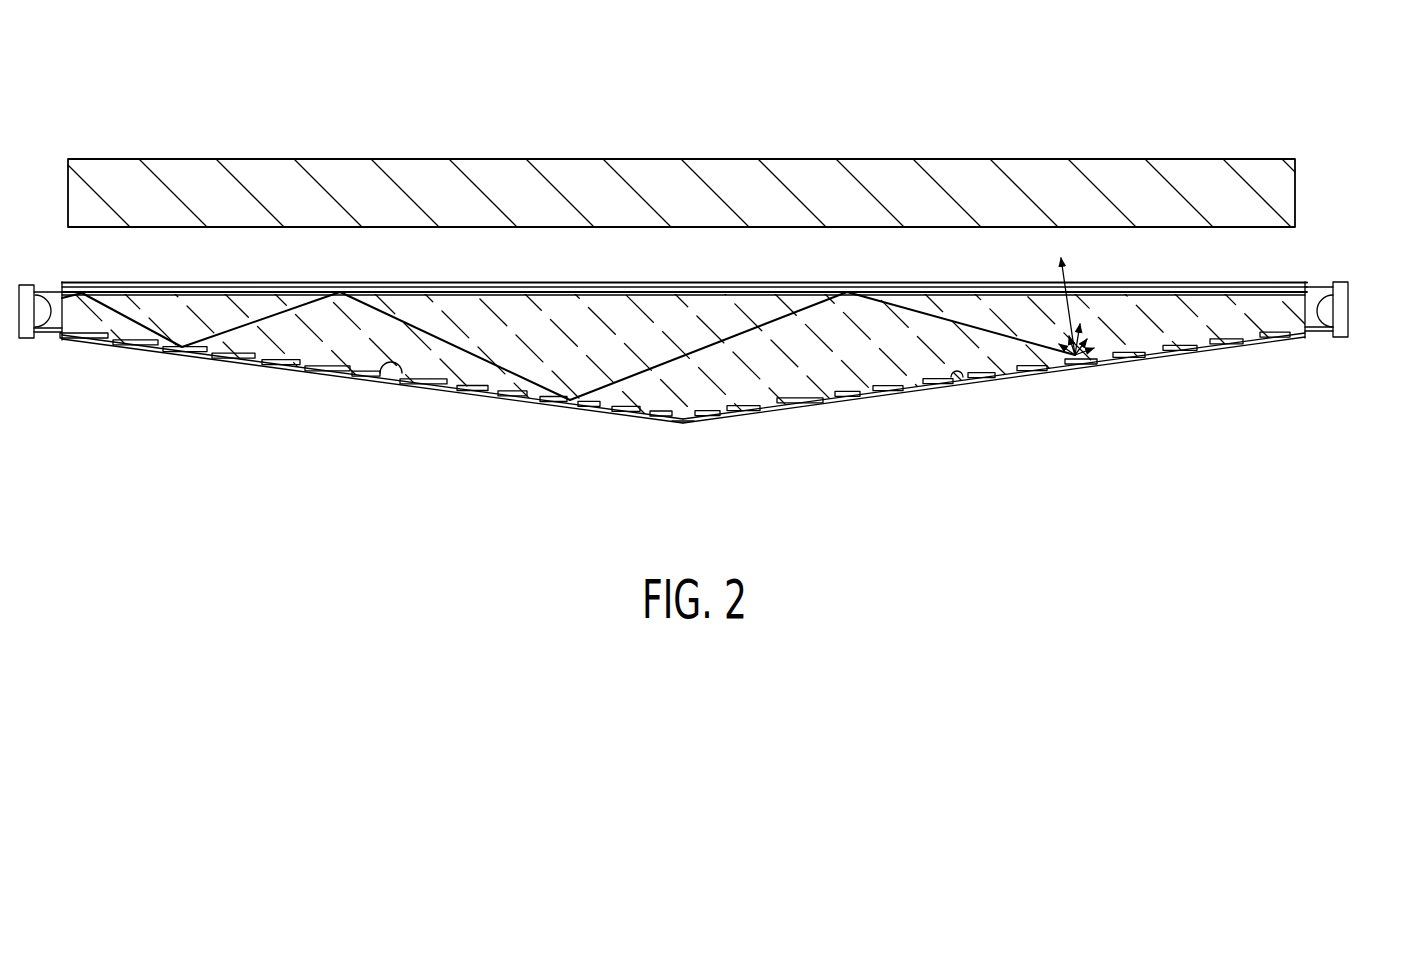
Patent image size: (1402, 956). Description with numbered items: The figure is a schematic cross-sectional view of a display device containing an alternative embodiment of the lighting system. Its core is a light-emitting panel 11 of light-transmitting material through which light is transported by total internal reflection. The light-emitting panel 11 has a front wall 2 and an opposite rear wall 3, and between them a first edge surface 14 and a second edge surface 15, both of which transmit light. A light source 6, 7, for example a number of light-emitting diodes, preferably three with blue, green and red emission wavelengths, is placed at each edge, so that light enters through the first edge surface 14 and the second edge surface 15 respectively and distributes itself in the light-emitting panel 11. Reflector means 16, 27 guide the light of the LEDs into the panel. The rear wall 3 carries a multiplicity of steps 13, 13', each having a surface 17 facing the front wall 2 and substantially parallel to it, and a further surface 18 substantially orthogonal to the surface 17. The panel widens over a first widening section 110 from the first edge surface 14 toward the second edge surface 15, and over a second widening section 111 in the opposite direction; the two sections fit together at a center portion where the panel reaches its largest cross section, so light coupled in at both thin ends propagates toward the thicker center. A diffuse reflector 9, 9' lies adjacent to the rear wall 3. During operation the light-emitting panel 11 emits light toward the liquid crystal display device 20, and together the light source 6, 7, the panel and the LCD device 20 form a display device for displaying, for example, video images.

The liquid crystal display device 20 is at (1275, 186).
The front wall 2 is at (159, 293).
The light-emitting panel 11 is at (210, 303).
The light source 6 is at (27, 320).
The reflector means 16 is at (48, 338).
The first edge surface 14 is at (67, 317).
The diffuse reflector 9 is at (372, 379).
The diffuse reflector 9' is at (994, 380).
The rear wall 3 is at (737, 403).
The step 13 is at (281, 401).
The step 13' is at (327, 406).
The surface of the steps 17 is at (398, 388).
The further surface of the steps 18 is at (948, 388).
The first widening section 110 is at (500, 345).
The second widening section 111 is at (898, 345).
The second edge surface 15 is at (1307, 318).
The reflector means 27 is at (1315, 337).
The light source 7 is at (1340, 318).